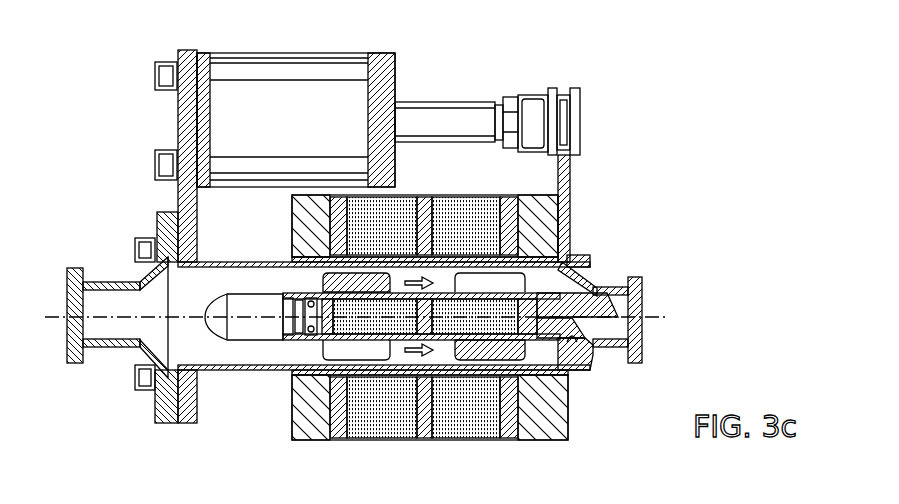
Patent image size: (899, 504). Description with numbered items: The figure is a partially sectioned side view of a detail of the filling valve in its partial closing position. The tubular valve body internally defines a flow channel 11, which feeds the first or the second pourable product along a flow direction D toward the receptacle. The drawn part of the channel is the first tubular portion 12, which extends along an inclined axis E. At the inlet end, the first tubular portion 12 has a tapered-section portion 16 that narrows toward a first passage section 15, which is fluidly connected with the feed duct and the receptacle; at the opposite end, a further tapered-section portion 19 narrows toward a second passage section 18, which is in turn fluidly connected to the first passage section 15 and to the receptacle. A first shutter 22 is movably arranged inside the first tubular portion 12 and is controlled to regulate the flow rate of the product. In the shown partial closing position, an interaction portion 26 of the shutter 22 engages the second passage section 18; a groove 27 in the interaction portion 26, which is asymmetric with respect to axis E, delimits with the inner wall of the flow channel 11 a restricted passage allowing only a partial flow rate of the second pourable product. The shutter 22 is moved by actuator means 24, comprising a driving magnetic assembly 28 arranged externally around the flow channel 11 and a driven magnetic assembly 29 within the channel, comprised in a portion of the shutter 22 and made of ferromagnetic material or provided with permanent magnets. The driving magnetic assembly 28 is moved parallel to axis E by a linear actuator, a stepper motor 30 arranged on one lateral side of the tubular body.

The flow channel 11 is at (210, 272).
The first tubular portion 12 is at (251, 357).
The first passage section 15 is at (140, 326).
The tapered-section portion 16 is at (158, 291).
The second passage section 18 is at (585, 342).
The further tapered-section portion 19 is at (496, 327).
The first shutter 22 is at (253, 303).
The actuator means 24 is at (343, 228).
The interaction portion 26 is at (603, 306).
The groove 27 is at (594, 327).
The driving magnetic assembly 28 is at (540, 221).
The driven magnetic assembly 29 is at (560, 345).
The stepper motor 30 is at (222, 100).
The flow direction D is at (420, 283).
The inclined axis E is at (98, 312).